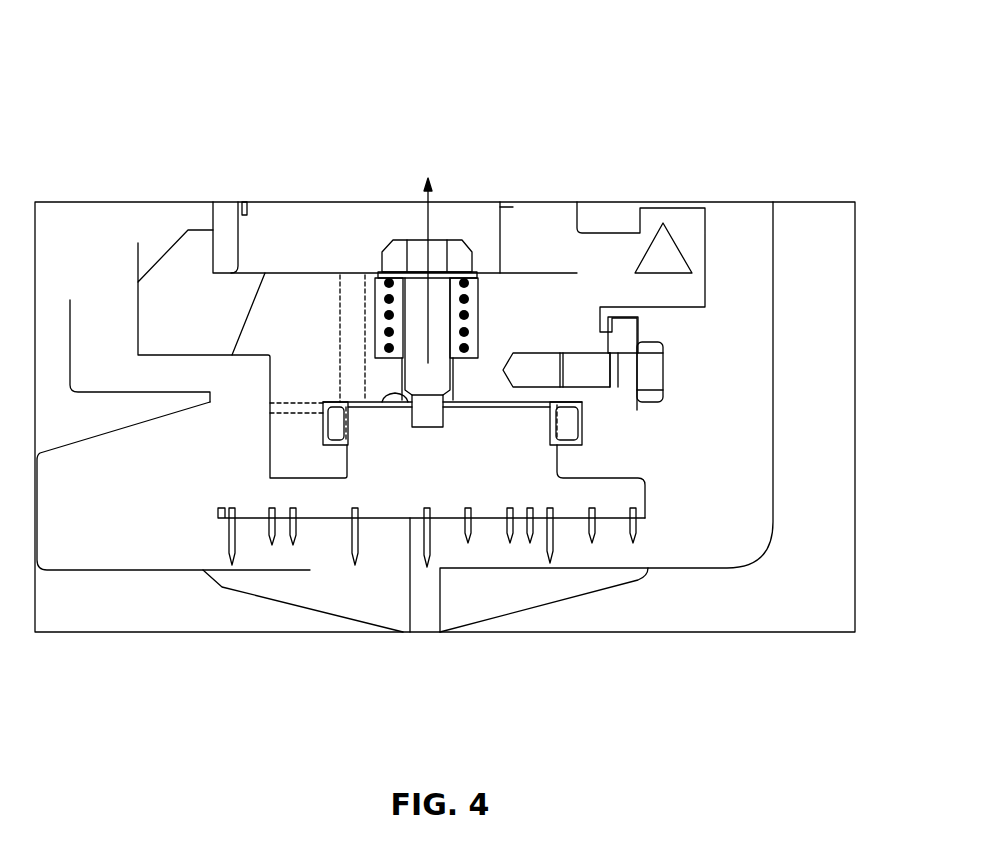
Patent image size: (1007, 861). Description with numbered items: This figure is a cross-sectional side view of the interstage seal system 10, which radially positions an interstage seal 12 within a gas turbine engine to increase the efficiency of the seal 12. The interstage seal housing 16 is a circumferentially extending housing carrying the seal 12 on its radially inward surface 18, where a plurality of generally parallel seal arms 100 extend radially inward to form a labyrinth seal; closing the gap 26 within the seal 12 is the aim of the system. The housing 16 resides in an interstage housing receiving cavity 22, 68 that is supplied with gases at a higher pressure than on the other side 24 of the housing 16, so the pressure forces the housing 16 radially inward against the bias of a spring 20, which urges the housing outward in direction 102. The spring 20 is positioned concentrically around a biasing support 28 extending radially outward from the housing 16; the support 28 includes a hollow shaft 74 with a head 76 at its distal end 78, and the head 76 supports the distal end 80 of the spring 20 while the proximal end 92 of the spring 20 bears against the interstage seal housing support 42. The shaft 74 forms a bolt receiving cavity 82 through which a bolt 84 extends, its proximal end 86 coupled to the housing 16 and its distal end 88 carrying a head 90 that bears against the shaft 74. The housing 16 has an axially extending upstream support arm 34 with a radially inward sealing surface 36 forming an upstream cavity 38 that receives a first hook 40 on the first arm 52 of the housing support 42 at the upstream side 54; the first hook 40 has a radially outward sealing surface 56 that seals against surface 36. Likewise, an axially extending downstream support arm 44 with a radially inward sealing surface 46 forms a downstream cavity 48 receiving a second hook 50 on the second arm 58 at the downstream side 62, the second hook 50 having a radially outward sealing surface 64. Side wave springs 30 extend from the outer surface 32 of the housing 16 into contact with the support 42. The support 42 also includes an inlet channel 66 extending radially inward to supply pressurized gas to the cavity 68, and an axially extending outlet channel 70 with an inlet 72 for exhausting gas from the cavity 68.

The interstage seal system 10 is at (704, 112).
The interstage seal 12 is at (222, 535).
The interstage seal housing 16 is at (638, 356).
The radially inward surface 18 is at (393, 520).
The spring 20 is at (500, 273).
The interstage housing receiving cavity 22 is at (537, 405).
The other side 24 is at (377, 520).
The gap 26 is at (328, 500).
The biasing support 28 is at (505, 205).
The side wave spring 30 is at (583, 426).
The outer surface 32 is at (585, 428).
The axially extending upstream support arm 34 is at (345, 452).
The radially inward sealing surface 36 is at (358, 403).
The upstream cavity 38 is at (349, 445).
The first hook 40 is at (322, 500).
The interstage seal housing support 42 is at (473, 374).
The axially extending downstream support arm 44 is at (490, 430).
The radially inward sealing surface 46 is at (573, 420).
The downstream cavity 48 is at (553, 443).
The second hook 50 is at (570, 458).
The first arm 52 is at (323, 420).
The upstream side 54 is at (347, 445).
The radially outward sealing surface 56 is at (307, 482).
The second arm 58 is at (600, 437).
The downstream side 62 is at (568, 458).
The radially outward sealing surface 64 is at (647, 535).
The inlet channel 66 is at (343, 290).
The interstage housing receiving cavity 68 is at (364, 285).
The outlet channel 70 is at (270, 410).
The inlet 72 is at (330, 425).
The shaft 74 is at (465, 287).
The head 76 is at (446, 240).
The distal end 78 is at (462, 235).
The distal end 80 is at (392, 272).
The bolt receiving cavity 82 is at (385, 398).
The bolt 84 is at (427, 410).
The proximal end 86 is at (418, 427).
The distal end 88 is at (436, 262).
The head 90 is at (411, 240).
The proximal end 92 is at (456, 367).
The seal arms 100 is at (527, 533).
The direction 102 is at (418, 278).